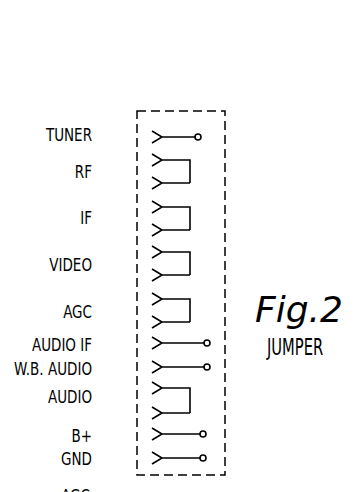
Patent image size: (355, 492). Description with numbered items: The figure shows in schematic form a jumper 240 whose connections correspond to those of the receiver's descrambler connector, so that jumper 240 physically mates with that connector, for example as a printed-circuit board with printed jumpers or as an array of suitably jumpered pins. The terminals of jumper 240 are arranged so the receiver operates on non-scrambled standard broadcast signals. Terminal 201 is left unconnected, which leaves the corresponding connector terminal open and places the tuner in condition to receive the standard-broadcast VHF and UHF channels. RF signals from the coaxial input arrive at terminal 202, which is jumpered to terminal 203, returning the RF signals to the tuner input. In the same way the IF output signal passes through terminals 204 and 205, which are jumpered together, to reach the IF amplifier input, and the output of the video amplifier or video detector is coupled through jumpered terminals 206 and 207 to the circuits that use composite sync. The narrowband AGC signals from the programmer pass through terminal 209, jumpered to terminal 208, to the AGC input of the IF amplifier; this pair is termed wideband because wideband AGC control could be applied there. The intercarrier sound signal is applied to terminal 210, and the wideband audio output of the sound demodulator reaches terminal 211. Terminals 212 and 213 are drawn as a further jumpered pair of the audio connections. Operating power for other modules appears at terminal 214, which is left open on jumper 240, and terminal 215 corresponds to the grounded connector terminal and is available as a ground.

The terminal 201 is at (151, 137).
The terminal 202 is at (151, 160).
The terminal 203 is at (151, 183).
The terminal 204 is at (151, 207).
The terminal 205 is at (151, 230).
The terminal 206 is at (151, 252).
The terminal 207 is at (151, 275).
The terminal 208 is at (151, 299).
The terminal 209 is at (151, 322).
The terminal 210 is at (151, 343).
The terminal 211 is at (151, 367).
The audio jumper pin 212 is at (151, 388).
The audio jumper pin 213 is at (151, 413).
The terminal 214 is at (151, 434).
The terminal 215 is at (151, 458).
The jumper 240 is at (273, 143).